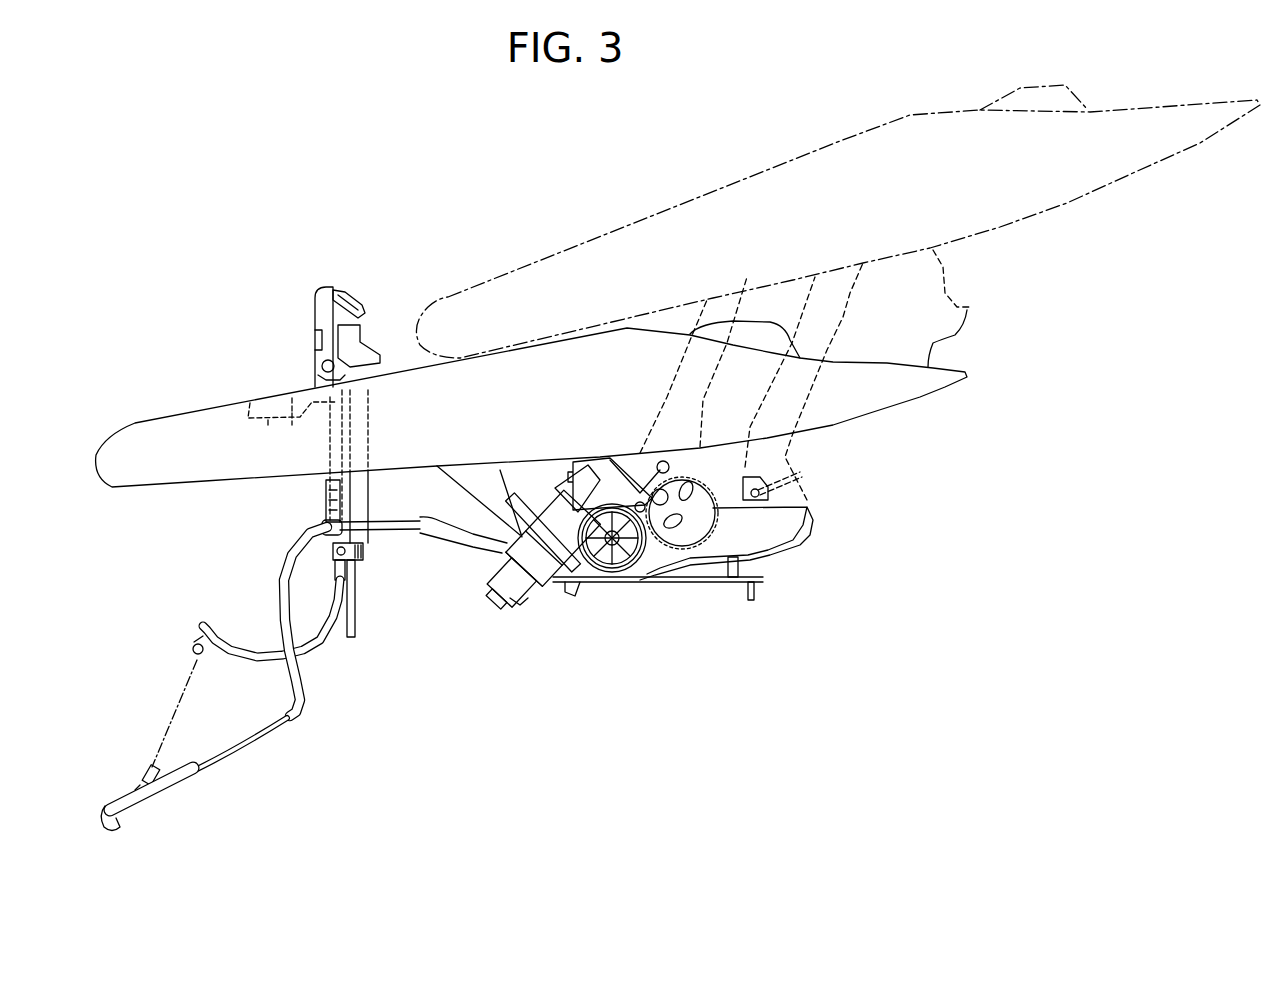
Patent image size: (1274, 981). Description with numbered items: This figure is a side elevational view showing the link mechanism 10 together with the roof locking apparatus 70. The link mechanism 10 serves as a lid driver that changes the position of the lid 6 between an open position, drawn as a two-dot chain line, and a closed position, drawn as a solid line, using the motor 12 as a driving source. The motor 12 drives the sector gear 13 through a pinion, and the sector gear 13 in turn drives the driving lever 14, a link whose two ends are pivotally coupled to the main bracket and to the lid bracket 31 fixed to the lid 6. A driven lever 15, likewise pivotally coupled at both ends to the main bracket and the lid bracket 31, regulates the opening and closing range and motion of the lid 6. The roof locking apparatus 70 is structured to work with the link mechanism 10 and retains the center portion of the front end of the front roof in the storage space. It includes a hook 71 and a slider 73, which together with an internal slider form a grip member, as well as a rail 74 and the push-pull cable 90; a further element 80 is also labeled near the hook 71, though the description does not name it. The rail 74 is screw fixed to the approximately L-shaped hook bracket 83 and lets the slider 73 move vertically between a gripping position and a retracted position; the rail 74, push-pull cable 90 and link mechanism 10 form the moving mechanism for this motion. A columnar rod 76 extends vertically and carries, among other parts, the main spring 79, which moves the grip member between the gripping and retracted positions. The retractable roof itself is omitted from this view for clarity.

The lid 6 is at (962, 300).
The link mechanism 10 is at (623, 590).
The motor 12 is at (535, 592).
The sector gear 13 is at (694, 555).
The driving lever 14 is at (752, 293).
The driven lever 15 is at (545, 483).
The lid bracket 31 is at (880, 283).
The roof locking apparatus 70 is at (312, 322).
The hook 71 is at (352, 300).
The slider 73 is at (370, 497).
The rail 74 is at (322, 512).
The rod 76 is at (358, 600).
The main spring 79 is at (367, 551).
The lever 80 is at (368, 340).
The hook bracket 83 is at (275, 392).
The push-pull cable 90 is at (435, 540).